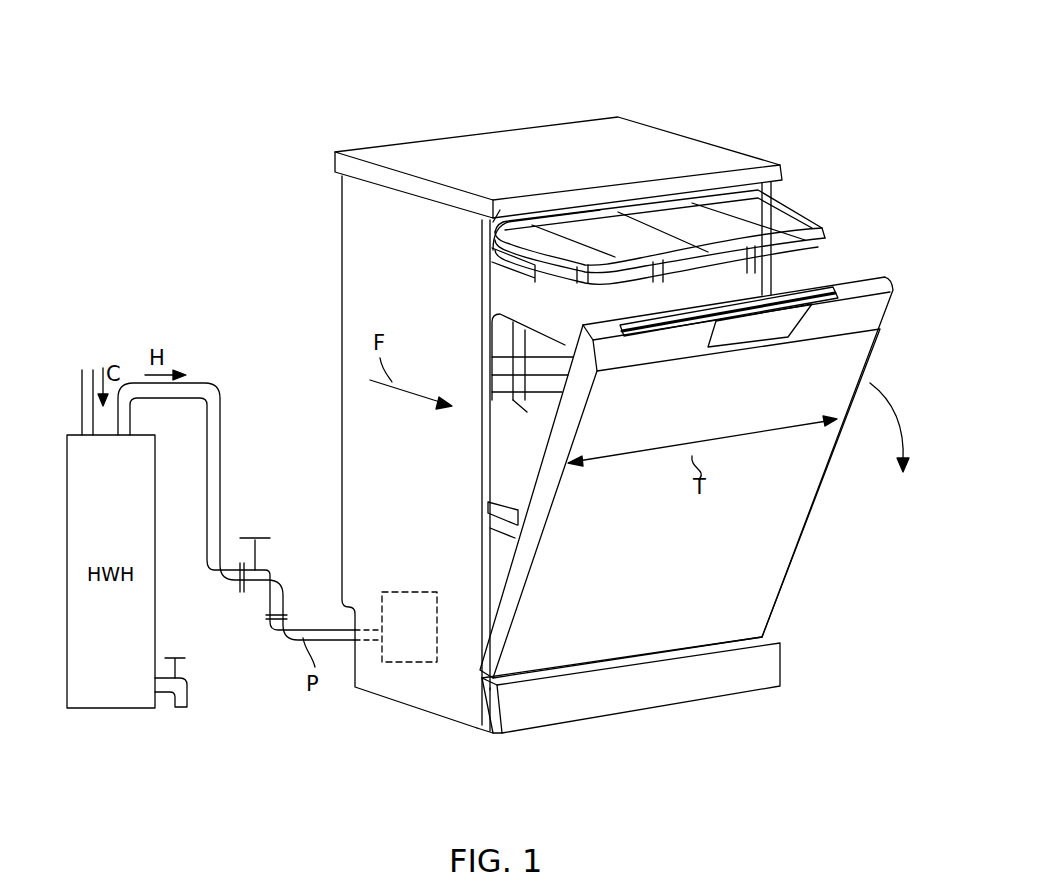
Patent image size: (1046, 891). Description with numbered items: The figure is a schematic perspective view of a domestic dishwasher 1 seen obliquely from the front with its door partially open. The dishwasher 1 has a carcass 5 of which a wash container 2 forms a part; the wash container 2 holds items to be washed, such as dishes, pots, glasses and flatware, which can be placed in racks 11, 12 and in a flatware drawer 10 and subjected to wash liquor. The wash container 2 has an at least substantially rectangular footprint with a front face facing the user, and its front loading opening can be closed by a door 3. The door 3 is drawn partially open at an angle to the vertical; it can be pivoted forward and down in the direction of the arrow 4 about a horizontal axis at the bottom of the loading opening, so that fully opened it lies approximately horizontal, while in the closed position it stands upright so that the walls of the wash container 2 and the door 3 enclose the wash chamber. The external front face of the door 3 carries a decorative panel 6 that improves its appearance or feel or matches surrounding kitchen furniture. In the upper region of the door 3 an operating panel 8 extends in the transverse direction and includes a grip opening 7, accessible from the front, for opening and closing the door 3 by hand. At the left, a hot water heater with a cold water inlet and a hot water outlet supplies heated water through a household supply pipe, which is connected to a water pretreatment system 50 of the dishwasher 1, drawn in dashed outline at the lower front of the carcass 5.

The dishwasher 1 is at (455, 108).
The wash container 2 is at (500, 290).
The door 3 is at (686, 449).
The arrow 4 is at (893, 403).
The carcass 5 is at (360, 514).
The decorative panel 6 is at (592, 560).
The grip opening 7 is at (755, 351).
The operating panel 8 is at (857, 307).
The flatware drawer 10 is at (723, 227).
The rack 11 is at (523, 412).
The rack 12 is at (515, 510).
The water pretreatment system 50 is at (407, 588).